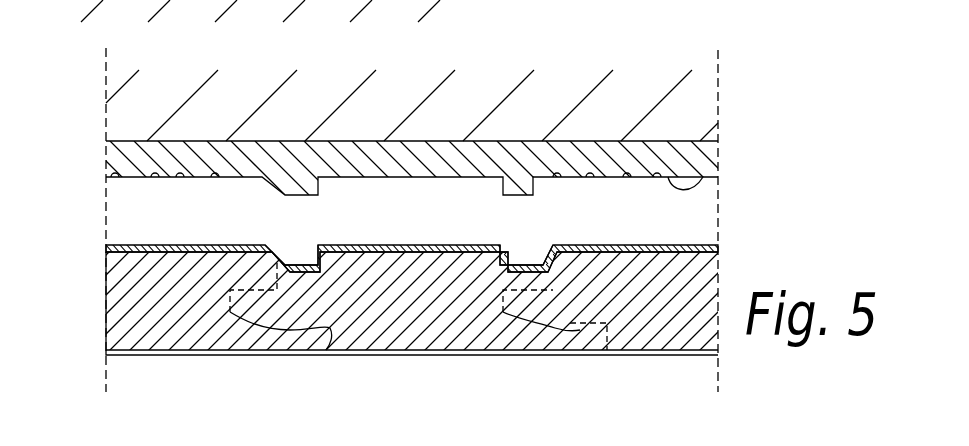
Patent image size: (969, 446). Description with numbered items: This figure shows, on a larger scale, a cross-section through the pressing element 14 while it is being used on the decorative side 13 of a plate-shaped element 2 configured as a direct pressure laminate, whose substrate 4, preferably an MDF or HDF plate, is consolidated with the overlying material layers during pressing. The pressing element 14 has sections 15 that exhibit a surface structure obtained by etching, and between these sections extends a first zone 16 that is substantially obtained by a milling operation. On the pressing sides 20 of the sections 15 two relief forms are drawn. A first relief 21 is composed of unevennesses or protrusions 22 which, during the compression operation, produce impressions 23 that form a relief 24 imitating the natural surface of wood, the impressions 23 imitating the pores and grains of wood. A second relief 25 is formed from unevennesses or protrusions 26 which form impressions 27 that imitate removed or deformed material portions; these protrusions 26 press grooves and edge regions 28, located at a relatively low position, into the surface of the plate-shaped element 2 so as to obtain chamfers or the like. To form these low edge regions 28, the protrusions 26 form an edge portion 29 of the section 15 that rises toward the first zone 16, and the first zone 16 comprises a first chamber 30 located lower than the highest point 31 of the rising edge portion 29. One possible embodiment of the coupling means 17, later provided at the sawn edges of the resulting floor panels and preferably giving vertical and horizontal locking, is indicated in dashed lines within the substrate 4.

The plate-shaped element 2 is at (96, 316).
The substrate 4 is at (431, 300).
The decorative side 13 is at (669, 232).
The pressing element 14 is at (662, 66).
The section 15 is at (128, 180).
The first zone 16 is at (402, 187).
The coupling means 17 is at (247, 320).
The pressing side 20 is at (160, 185).
The first relief 21 is at (183, 184).
The protrusion 22 is at (253, 180).
The impression 23 is at (108, 245).
The relief 24 is at (720, 242).
The second relief 25 is at (320, 197).
The protrusion 26 is at (552, 178).
The impression 27 is at (280, 252).
The edge region 28 is at (276, 263).
The edge portion 29 is at (257, 184).
The first chamber 30 is at (421, 178).
The highest point 31 is at (283, 194).